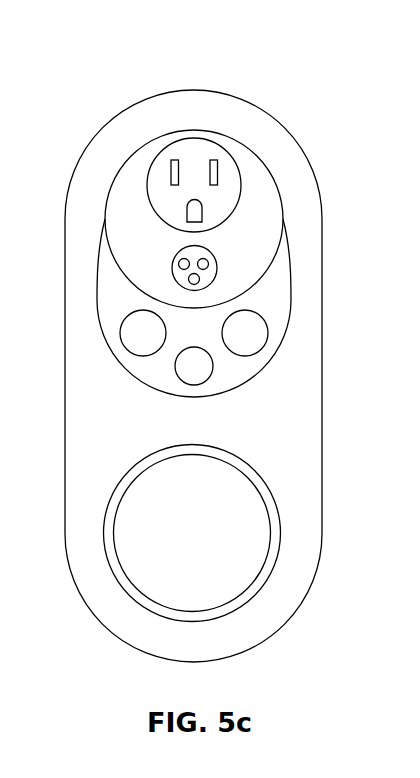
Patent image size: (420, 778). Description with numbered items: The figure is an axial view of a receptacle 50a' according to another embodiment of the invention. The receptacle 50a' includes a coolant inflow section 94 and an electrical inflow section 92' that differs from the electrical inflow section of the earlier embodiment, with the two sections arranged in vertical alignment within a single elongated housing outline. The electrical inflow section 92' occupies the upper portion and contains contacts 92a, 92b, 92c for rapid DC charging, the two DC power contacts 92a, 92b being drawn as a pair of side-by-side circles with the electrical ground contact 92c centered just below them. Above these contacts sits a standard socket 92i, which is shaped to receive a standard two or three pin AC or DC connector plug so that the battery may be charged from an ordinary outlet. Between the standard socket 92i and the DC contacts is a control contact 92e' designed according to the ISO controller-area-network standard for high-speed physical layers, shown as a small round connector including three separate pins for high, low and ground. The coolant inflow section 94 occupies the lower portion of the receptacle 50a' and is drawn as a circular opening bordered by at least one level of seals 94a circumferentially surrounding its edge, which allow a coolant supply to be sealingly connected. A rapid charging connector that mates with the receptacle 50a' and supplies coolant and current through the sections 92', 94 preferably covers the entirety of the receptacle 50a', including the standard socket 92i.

The receptacle 50a' is at (193, 363).
The electrical inflow section 92' is at (194, 215).
The standard socket 92i is at (138, 182).
The control contact 92e' is at (280, 254).
The DC power contact 92a is at (143, 357).
The DC power contact 92b is at (268, 333).
The electrical ground contact 92c is at (192, 385).
The seals 94a is at (265, 493).
The coolant inflow section 94 is at (252, 553).